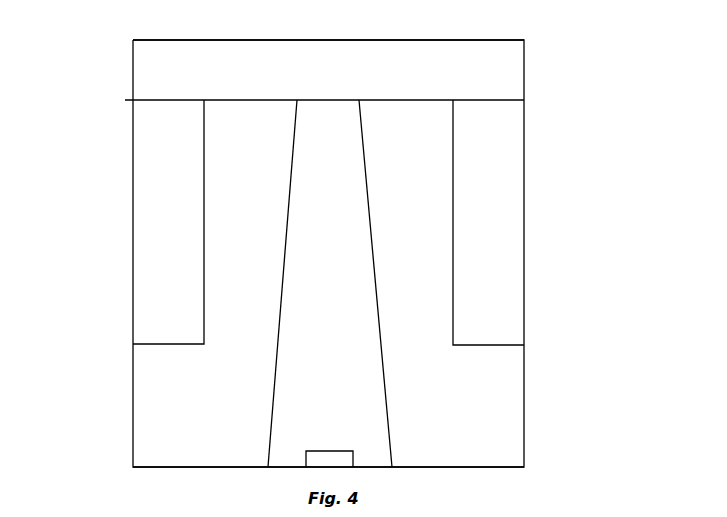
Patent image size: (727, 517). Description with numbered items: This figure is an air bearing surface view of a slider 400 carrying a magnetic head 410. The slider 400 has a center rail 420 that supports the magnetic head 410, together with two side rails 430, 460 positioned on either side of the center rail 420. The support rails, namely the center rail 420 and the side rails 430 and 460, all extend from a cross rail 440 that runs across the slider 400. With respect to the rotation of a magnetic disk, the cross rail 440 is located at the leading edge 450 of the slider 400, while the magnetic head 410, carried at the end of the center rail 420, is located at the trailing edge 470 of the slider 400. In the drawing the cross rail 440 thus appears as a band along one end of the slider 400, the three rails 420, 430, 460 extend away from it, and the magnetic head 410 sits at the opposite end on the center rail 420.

The slider 400 is at (52, 431).
The magnetic head 410 is at (320, 460).
The center rail 420 is at (306, 337).
The side rail 430 is at (165, 199).
The cross rail 440 is at (165, 62).
The leading edge 450 is at (187, 40).
The side rail 460 is at (507, 216).
The trailing edge 470 is at (454, 467).